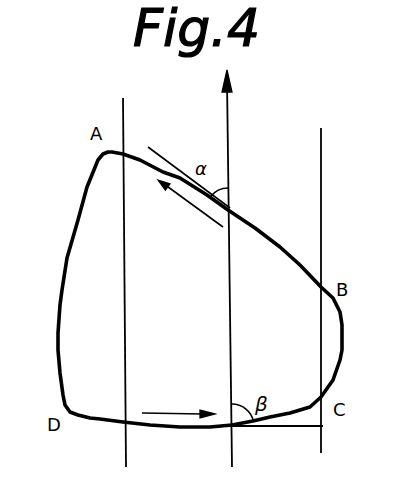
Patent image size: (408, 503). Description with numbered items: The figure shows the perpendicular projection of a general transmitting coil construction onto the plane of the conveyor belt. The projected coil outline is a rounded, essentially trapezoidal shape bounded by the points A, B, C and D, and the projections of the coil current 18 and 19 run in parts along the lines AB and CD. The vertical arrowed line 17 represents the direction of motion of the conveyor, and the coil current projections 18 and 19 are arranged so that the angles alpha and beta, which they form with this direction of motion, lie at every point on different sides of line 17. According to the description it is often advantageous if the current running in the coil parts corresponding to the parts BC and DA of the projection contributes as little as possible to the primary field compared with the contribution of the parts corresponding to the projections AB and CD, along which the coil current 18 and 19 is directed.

The line representing the direction of motion 17 is at (215, 268).
The projection of the coil current 18 is at (190, 210).
The projection of the coil current 19 is at (178, 406).